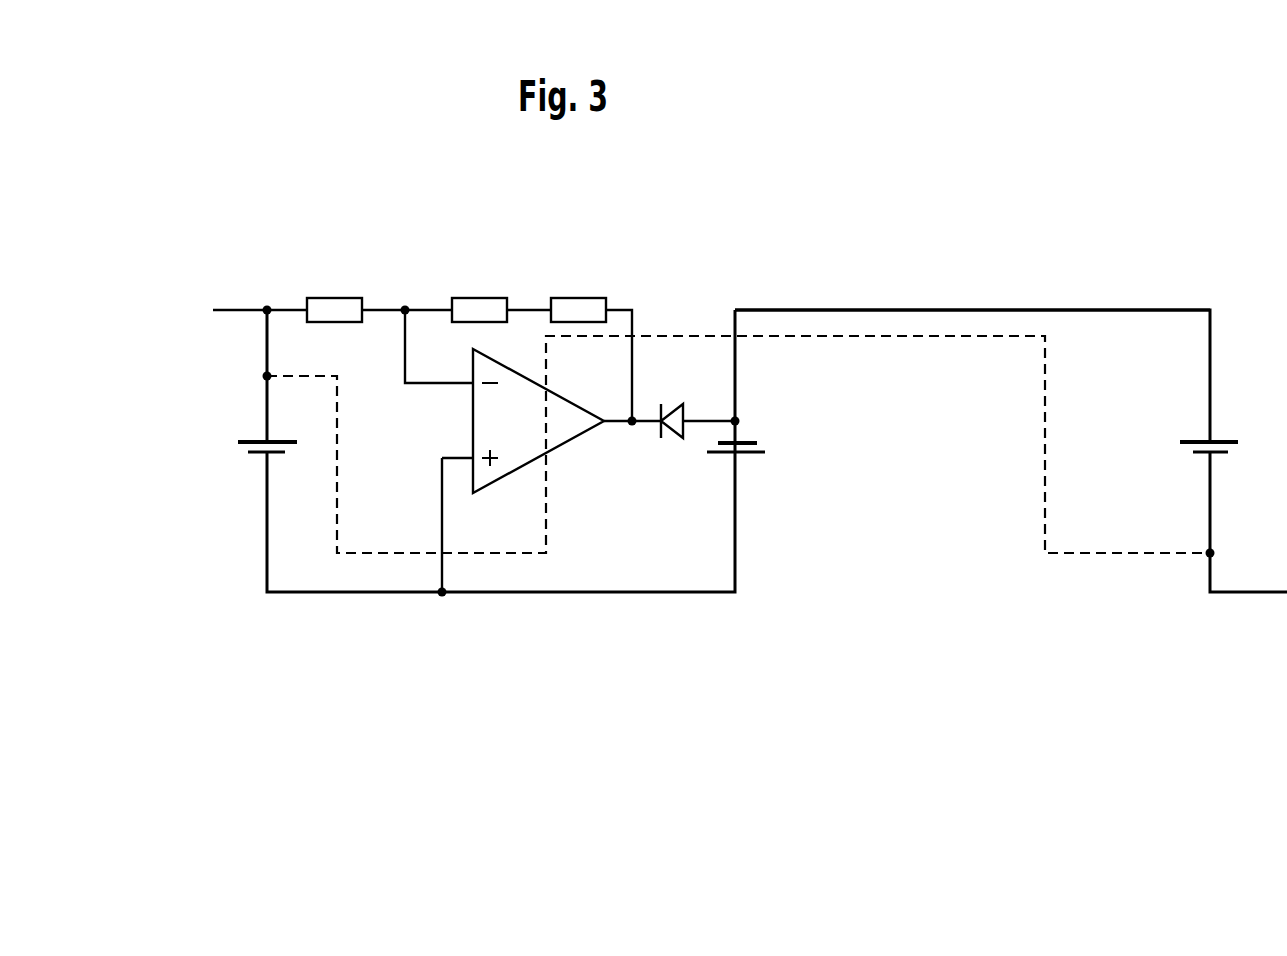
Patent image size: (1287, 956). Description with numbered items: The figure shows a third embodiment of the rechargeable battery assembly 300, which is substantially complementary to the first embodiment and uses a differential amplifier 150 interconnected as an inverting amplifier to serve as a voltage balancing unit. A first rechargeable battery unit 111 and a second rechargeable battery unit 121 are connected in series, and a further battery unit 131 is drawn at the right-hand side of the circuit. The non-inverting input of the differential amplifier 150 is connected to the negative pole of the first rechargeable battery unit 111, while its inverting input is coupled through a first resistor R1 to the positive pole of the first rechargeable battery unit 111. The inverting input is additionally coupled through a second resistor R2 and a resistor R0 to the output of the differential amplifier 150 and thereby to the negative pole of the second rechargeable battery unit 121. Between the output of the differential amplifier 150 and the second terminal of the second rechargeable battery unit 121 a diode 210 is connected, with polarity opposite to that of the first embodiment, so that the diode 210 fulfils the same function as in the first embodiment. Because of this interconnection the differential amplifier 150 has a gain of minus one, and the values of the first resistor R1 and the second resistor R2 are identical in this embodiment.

The rechargeable battery assembly 300 is at (818, 290).
The first rechargeable battery unit 111 is at (257, 453).
The second rechargeable battery unit 121 is at (747, 440).
The third battery cell 131 is at (1200, 440).
The differential amplifier 150 is at (560, 448).
The diode 210 is at (667, 433).
The first resistor R1 is at (334, 295).
The second resistor R2 is at (479, 295).
The resistor R0 is at (578, 295).